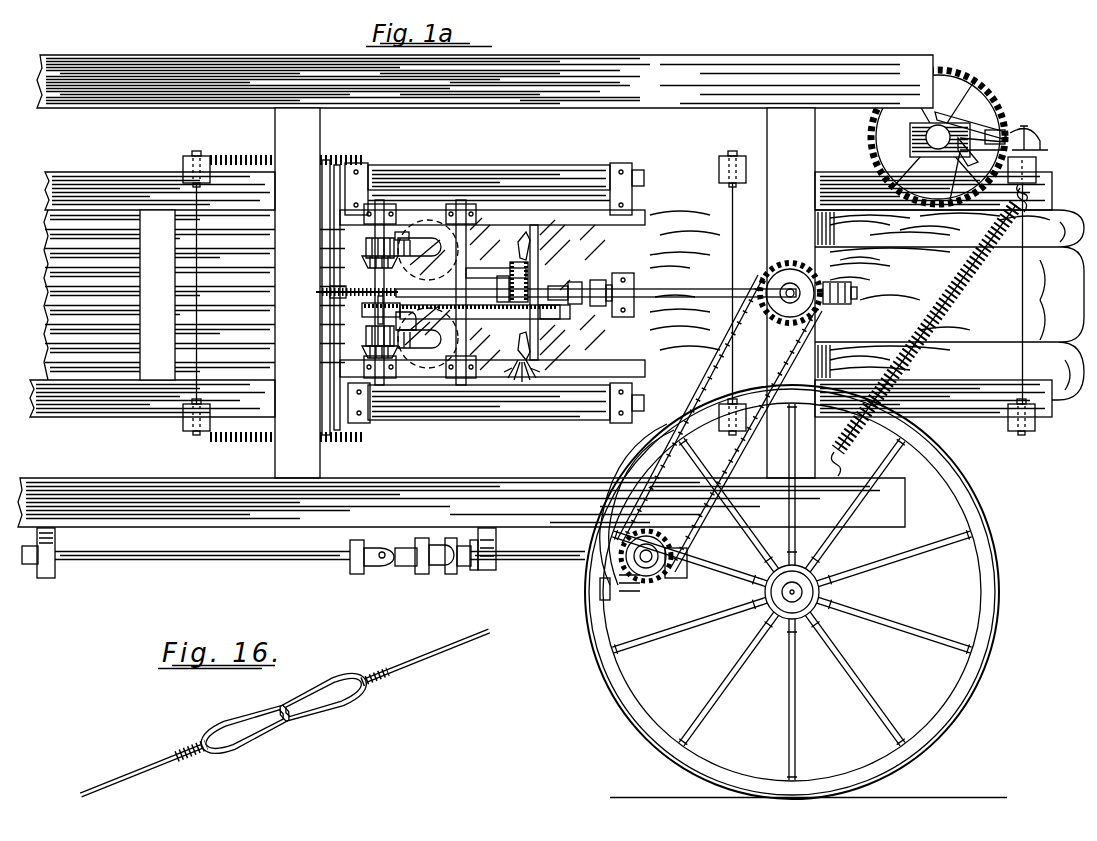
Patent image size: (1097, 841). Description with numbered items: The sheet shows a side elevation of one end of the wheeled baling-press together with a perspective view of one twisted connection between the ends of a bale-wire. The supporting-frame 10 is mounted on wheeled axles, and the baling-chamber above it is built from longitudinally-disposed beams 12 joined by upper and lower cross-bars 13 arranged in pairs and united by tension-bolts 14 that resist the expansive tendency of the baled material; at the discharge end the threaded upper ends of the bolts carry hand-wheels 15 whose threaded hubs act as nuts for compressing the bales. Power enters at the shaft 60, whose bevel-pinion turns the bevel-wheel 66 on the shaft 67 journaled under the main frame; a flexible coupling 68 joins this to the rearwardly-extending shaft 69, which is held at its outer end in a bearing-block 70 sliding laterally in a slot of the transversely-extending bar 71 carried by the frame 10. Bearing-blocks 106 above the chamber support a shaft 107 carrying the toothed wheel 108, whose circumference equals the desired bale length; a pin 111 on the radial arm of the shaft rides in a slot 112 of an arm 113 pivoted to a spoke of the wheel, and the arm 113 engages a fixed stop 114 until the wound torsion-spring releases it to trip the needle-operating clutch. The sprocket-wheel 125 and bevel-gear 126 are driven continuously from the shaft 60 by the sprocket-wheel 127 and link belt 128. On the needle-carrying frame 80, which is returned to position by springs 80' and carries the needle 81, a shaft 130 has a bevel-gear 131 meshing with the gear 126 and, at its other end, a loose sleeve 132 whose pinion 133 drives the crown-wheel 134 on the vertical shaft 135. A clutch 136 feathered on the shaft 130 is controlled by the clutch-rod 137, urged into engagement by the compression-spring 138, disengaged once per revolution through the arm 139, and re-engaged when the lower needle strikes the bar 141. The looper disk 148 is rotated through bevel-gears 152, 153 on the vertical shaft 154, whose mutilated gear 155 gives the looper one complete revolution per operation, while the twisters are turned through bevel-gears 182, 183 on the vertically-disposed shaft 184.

The supporting-frame 10 is at (82, 478).
The longitudinally-disposed beams 12 is at (102, 174).
The cross-bars 13 is at (182, 165).
The tension-bolts 14 is at (1020, 313).
The hand-wheels 15 is at (1040, 155).
The shaft 60 is at (652, 566).
The bevel-wheel 66 is at (626, 588).
The shaft 67 is at (542, 560).
The flexible coupling 68 is at (410, 563).
The rearwardly-extending shaft 69 is at (228, 560).
The bearing-block 70 is at (58, 566).
The transversely-extending bar 71 is at (42, 566).
The supporting-frame 80 is at (483, 299).
The springs 80' is at (286, 291).
The needle 81 is at (402, 232).
The bearing-blocks 106 is at (972, 155).
The shaft 107 is at (939, 146).
The toothed wheel 108 is at (962, 80).
The pin 111 is at (970, 176).
The slot 112 is at (1000, 128).
The arm 113 is at (975, 118).
The fixed stop 114 is at (1030, 136).
The sprocket-wheel 125 is at (785, 328).
The bevel-gear 126 is at (790, 262).
The sprocket-wheel 127 is at (658, 538).
The link belt 128 is at (752, 444).
The shaft 130 is at (700, 270).
The bevel-gear 131 is at (826, 282).
The loose sleeve 132 is at (568, 283).
The pinion 133 is at (530, 278).
The crown-wheel or bevel-gear 134 is at (480, 292).
The vertically-disposed shaft 135 is at (496, 263).
The clutch 136 is at (600, 281).
The clutch-rod 137 is at (324, 295).
The compression-spring 138 is at (330, 286).
The arm 139 is at (504, 275).
The rod or bar 141 is at (378, 320).
The dished plate or disk 148 is at (425, 236).
The bevel-gears 152 is at (366, 240).
The bevel-gears 153 is at (362, 258).
The vertical shaft 154 is at (396, 322).
The mutilated gear 155 is at (364, 312).
The bevel-gear 182 is at (530, 250).
The bevel-gear 183 is at (522, 382).
The vertically-disposed shaft 184 is at (557, 322).